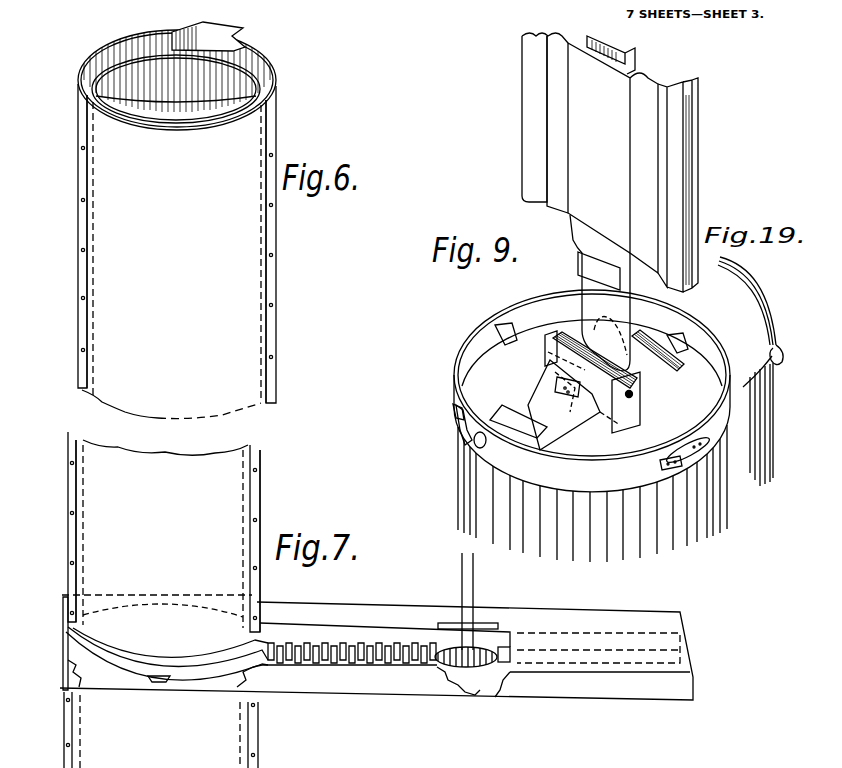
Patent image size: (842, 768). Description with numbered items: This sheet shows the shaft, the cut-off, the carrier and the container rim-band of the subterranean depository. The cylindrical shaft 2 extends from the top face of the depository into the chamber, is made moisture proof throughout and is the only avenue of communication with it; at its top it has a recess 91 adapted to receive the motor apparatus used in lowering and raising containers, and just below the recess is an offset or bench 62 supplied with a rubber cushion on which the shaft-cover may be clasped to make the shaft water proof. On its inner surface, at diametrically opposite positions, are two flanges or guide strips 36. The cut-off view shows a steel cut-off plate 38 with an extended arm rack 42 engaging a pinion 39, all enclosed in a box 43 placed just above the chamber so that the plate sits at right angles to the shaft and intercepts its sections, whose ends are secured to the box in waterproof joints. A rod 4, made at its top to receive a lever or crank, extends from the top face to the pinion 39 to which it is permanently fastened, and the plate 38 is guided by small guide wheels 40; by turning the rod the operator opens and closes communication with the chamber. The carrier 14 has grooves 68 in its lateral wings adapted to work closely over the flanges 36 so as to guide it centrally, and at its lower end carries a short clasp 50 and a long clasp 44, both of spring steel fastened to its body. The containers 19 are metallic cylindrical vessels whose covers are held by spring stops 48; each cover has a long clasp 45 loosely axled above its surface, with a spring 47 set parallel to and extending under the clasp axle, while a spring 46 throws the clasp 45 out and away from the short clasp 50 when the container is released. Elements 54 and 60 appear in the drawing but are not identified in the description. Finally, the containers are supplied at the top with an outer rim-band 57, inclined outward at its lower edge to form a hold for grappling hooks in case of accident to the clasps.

In FIG. 6, the cylindrical shaft 2 is at (177, 224).
In FIG. 7, the cylindrical shaft 2 is at (161, 600).
In FIG. 6, the flanges or guide strips 36 is at (93, 167).
In FIG. 6, the offset or bench 62 is at (218, 73).
In FIG. 6, the recess 91 is at (208, 36).
In FIG. 7, the cut-off plate 38 is at (72, 650).
In FIG. 7, the guide wheels 40 is at (169, 681).
In FIG. 7, the arm rack 42 is at (252, 646).
In FIG. 7, the pinion 39 is at (458, 667).
In FIG. 7, the rod 4 is at (468, 601).
In FIG. 7, the box 43 is at (684, 650).
In FIG. 9, the carrier 14 is at (613, 154).
In FIG. 9, the grooves 68 is at (708, 166).
In FIG. 9, the short clasp 50 is at (599, 266).
In FIG. 9, the long clasp 44 is at (600, 293).
In FIG. 9, the containers 19 is at (592, 426).
In FIG. 9, the spring 46 is at (512, 325).
In FIG. 9, the long clasp 45 is at (560, 420).
In FIG. 9, the spring 47 is at (642, 392).
In FIG. 9, the spring stops 48 is at (462, 445).
In FIG. 9, the catch 54 is at (453, 418).
In FIG. 9, the slot 60 is at (700, 425).
In FIG. 19, the outer rim-band 57 is at (779, 348).